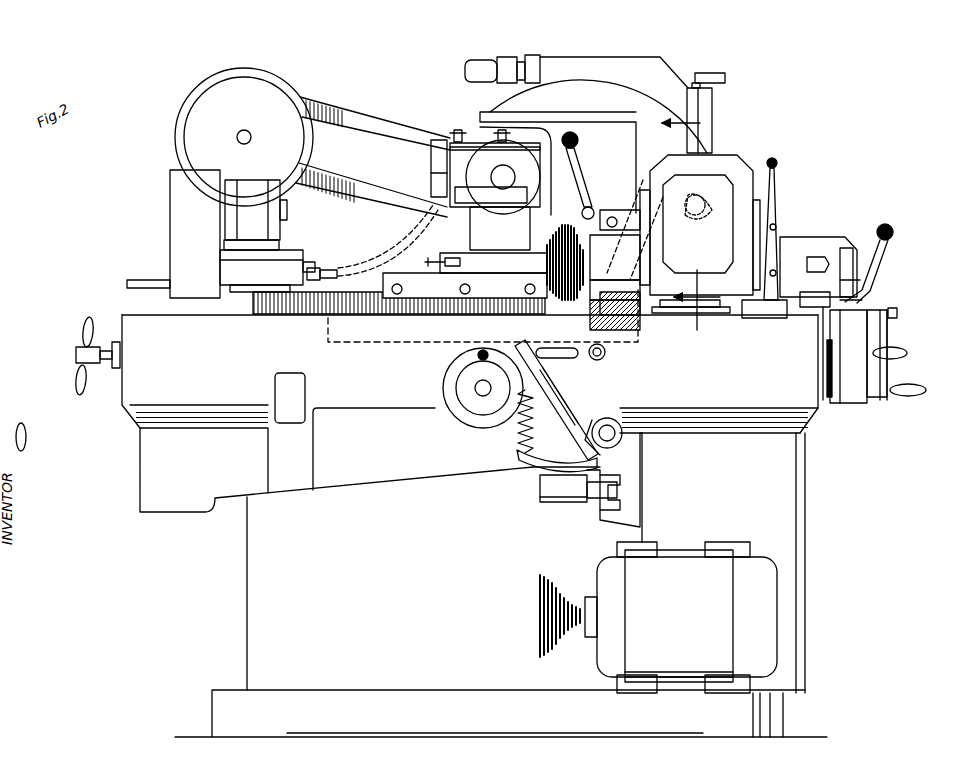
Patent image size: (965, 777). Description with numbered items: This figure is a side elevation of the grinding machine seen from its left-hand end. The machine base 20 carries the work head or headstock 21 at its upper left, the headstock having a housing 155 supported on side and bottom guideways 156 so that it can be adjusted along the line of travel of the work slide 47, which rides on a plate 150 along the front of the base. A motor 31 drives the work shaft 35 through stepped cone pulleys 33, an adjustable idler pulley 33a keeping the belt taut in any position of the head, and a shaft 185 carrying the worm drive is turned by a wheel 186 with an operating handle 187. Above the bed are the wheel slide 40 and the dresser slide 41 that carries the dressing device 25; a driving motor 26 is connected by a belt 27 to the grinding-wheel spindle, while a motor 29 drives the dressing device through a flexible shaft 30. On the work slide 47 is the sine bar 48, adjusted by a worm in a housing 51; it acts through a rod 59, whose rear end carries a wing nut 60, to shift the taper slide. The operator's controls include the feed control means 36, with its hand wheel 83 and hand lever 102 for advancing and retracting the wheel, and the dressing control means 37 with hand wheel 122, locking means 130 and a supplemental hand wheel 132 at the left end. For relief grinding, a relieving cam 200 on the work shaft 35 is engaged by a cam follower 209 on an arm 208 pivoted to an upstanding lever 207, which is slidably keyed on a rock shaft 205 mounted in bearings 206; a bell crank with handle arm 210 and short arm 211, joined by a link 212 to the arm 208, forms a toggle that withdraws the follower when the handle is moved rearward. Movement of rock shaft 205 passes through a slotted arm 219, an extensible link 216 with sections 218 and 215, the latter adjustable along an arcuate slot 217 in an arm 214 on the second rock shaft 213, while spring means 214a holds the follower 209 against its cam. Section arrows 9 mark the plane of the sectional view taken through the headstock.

The section line arrows 9 is at (691, 199).
The machine base 20 is at (800, 510).
The work head 21 is at (745, 165).
The dressing device 25 is at (520, 147).
The driving motor 26 is at (283, 97).
The belt 27 is at (406, 150).
The motor 29 is at (260, 185).
The flexible shaft 30 is at (345, 272).
The motor 31 is at (690, 560).
The stepped cone pulleys 33 is at (548, 242).
The adjustable idler pulley 33a is at (545, 500).
The work shaft 35 is at (708, 203).
The feed control means 36 is at (895, 324).
The dressing device control means 37 is at (856, 405).
The wheel slide 40 is at (295, 312).
The dresser slide 41 is at (418, 283).
The work slide 47 is at (820, 242).
The sine bar 48 is at (852, 303).
The housing 51 is at (850, 284).
The rod 59 is at (76, 357).
The wing nut 60 is at (80, 332).
The hand wheel 83 is at (884, 396).
The hand lever 102 is at (893, 240).
The operator's hand wheel 122 is at (862, 339).
The locking means 130 is at (888, 367).
The hand wheel 132 is at (445, 385).
The plate 150 is at (786, 305).
The housing 155 is at (742, 168).
The side and bottom guideways 156 is at (764, 309).
The shaft 185 is at (760, 238).
The wheel 186 is at (777, 215).
The operating handle 187 is at (778, 170).
The relieving cam 200 is at (642, 255).
The rock shaft 205 is at (606, 352).
The bearings 206 is at (606, 358).
The upstanding lever 207 is at (585, 303).
The arm 208 is at (645, 268).
The cam follower 209 is at (703, 124).
The long arm 210 is at (586, 180).
The short arm 211 is at (582, 213).
The link 212 is at (612, 216).
The second rock shaft 213 is at (615, 440).
The arm 214 is at (550, 455).
The spring means 214a is at (516, 452).
The link section 215 is at (605, 418).
The extensible link 216 is at (570, 388).
The arcuate slot 217 is at (535, 470).
The link section 218 is at (522, 345).
The slotted arm 219 is at (555, 348).